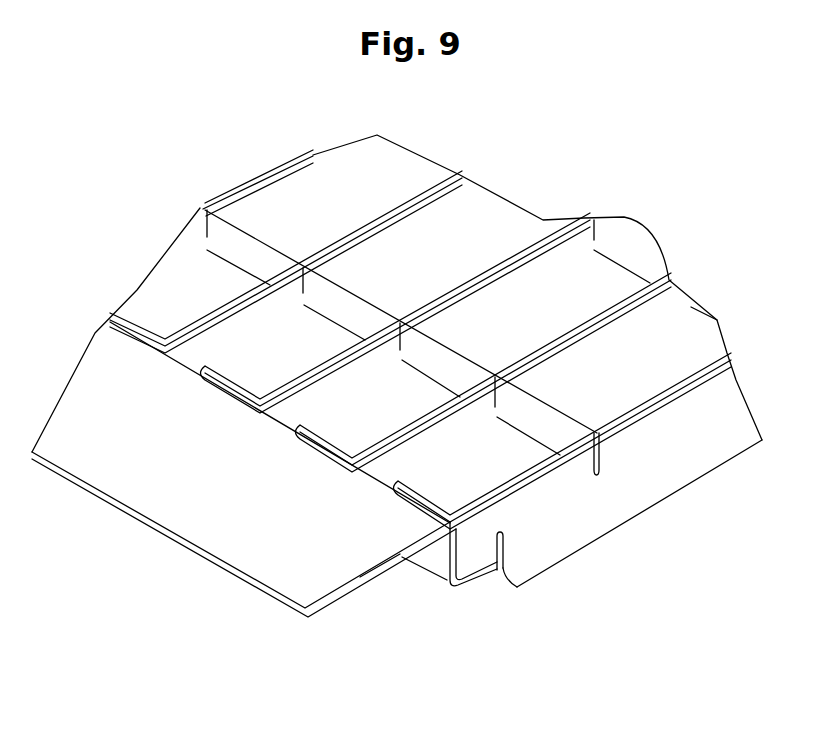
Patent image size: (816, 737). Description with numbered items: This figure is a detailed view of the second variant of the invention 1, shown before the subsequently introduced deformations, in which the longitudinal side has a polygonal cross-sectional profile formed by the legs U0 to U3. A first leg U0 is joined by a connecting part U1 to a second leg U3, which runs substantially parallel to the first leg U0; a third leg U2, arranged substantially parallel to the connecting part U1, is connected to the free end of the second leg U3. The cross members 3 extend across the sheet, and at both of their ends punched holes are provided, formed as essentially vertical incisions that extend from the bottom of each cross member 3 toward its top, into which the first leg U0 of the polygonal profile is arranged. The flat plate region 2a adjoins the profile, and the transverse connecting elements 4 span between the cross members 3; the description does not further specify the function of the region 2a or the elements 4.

The bus bar / electrical connection component 1 is at (107, 208).
The plate portion (flange) 2a is at (155, 462).
The cross member 3 is at (420, 207).
The cross member / connecting portion 4 is at (249, 257).
The first leg U0 is at (503, 550).
The connecting part U1 is at (475, 575).
The third leg U2 is at (373, 578).
The second leg U3 is at (447, 580).